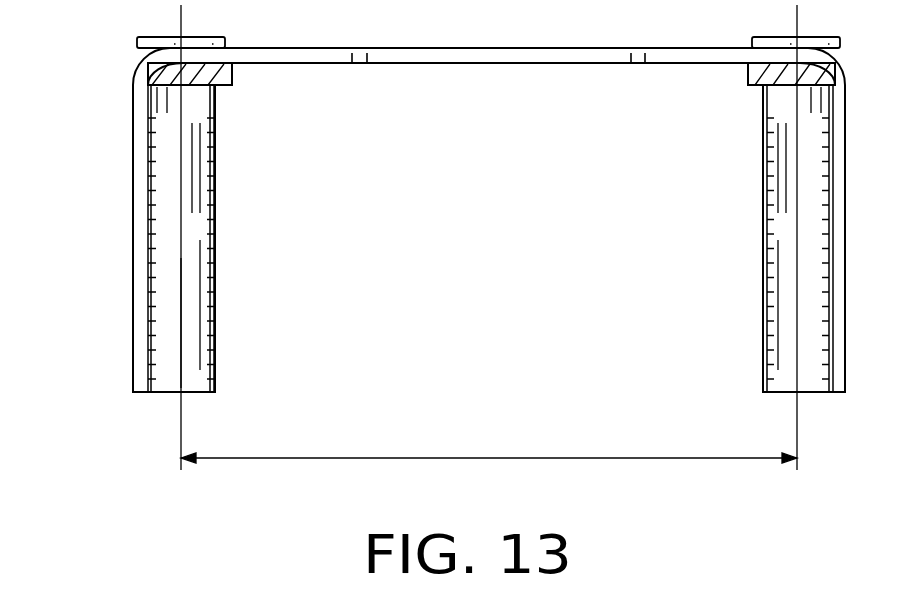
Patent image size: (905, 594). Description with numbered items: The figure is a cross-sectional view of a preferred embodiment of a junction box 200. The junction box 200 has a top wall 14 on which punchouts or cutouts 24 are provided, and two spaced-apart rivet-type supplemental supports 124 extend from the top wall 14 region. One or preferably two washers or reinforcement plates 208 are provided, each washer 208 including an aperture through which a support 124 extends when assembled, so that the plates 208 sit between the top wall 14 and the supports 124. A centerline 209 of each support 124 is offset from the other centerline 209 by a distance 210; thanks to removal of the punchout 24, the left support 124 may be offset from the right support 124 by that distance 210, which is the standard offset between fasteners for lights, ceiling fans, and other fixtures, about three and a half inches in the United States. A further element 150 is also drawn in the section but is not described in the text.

The top wall 14 is at (503, 48).
The punchout 24 is at (133, 76).
The junction box 200 is at (123, 168).
The washer or reinforcement plate 208 is at (232, 77).
The inner member 150 is at (215, 109).
The supplemental support 124 is at (215, 245).
The centerline 209 is at (181, 435).
The distance 210 is at (427, 458).